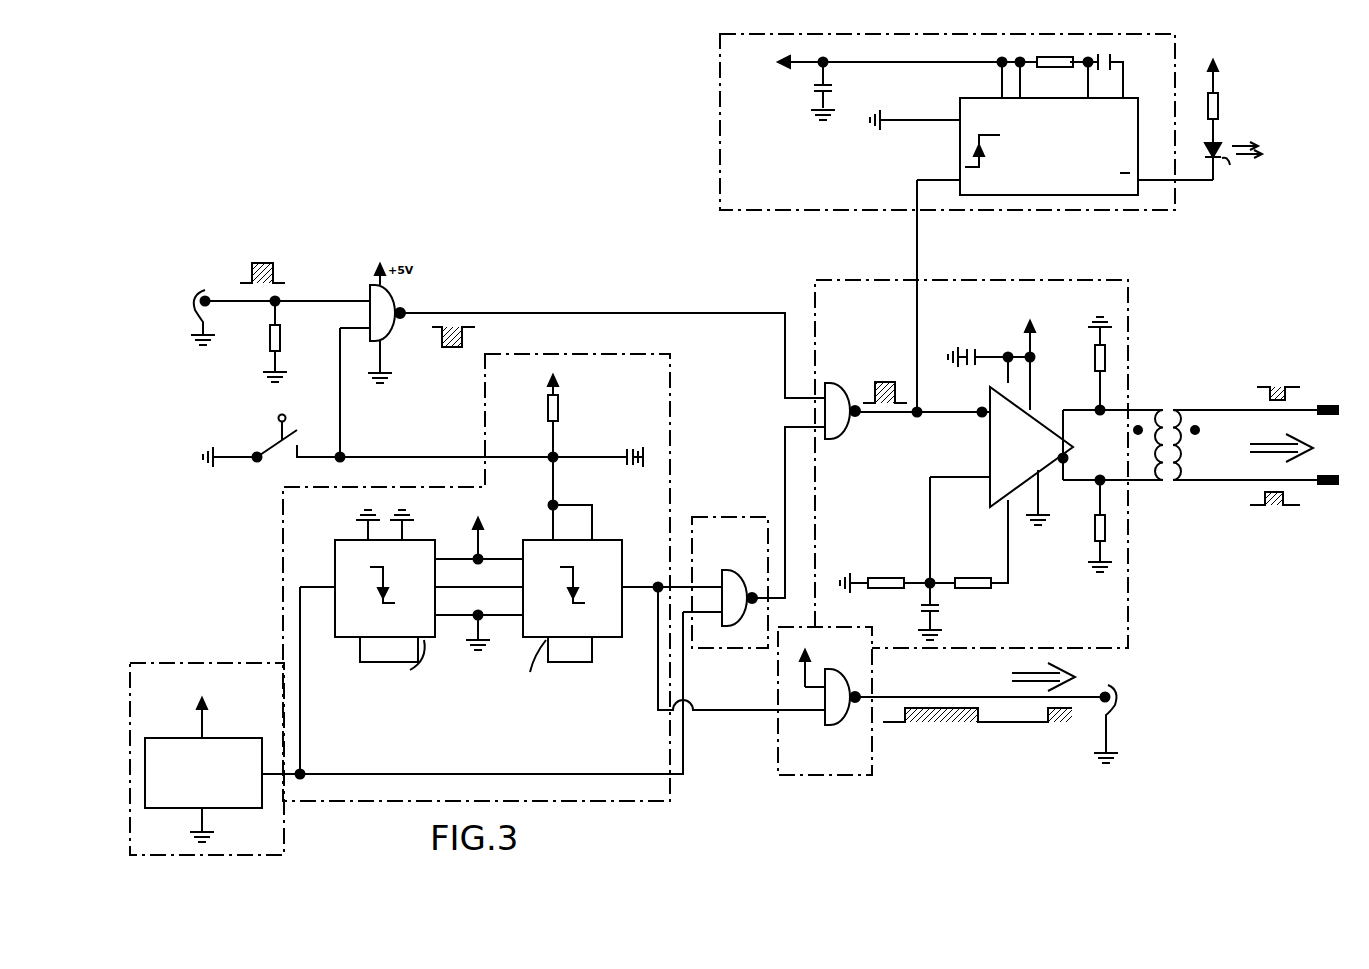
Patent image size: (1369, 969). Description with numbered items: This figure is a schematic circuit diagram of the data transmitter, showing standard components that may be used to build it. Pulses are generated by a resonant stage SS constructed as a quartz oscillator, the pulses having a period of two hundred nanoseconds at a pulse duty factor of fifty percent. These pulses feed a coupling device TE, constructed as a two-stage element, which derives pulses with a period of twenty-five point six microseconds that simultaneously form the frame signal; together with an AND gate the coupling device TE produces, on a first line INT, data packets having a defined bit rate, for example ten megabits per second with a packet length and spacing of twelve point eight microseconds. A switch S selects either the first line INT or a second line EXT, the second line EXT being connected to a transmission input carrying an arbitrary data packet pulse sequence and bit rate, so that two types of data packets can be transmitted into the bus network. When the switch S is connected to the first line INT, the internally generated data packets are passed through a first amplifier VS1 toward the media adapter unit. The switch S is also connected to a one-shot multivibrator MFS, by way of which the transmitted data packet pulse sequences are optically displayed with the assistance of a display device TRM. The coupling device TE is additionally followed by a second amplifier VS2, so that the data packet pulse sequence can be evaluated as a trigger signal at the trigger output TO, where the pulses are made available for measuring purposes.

The one-shot multivibrator MFS is at (947, 122).
The display device TRM is at (1240, 120).
The switch S is at (262, 440).
The second line EXT is at (299, 423).
The first line INT is at (308, 466).
The coupling device TE is at (543, 577).
The resonant stage SS is at (217, 759).
The second amplifier VS2 is at (941, 702).
The trigger output TO is at (1122, 715).
The first amplifier VS1 is at (1076, 464).